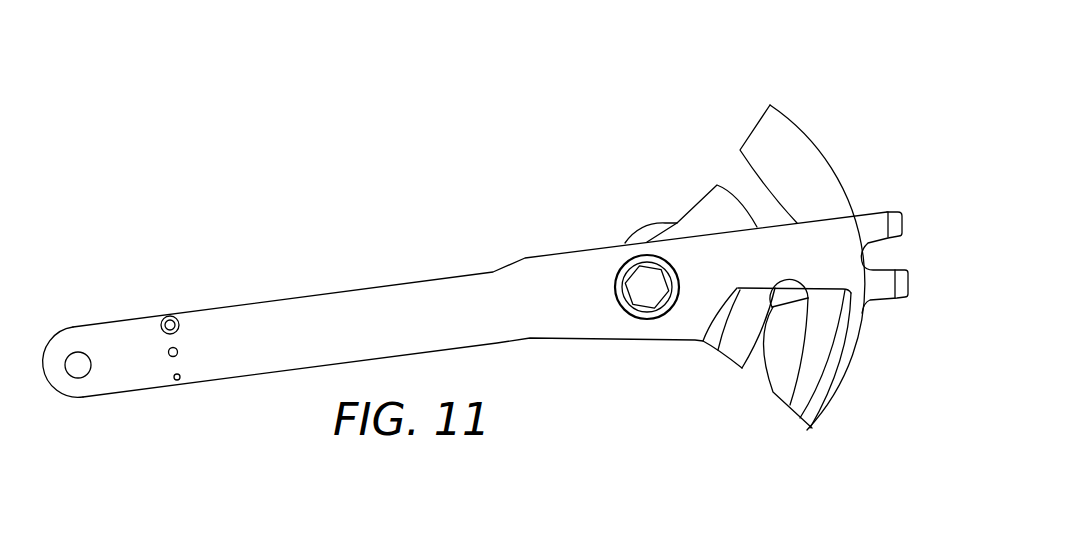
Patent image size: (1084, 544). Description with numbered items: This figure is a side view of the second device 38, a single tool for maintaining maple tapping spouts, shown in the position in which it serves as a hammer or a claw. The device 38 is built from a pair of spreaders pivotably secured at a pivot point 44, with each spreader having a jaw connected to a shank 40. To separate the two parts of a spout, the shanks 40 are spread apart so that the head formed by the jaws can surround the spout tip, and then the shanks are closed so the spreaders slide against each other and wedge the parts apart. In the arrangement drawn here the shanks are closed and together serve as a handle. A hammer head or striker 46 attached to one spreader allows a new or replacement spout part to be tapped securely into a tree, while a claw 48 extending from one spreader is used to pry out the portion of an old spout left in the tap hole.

The second device 38 is at (452, 243).
The shank 40 is at (238, 305).
The pivot point 44 is at (628, 293).
The hammer head or striker 46 is at (652, 230).
The claw 48 is at (892, 240).